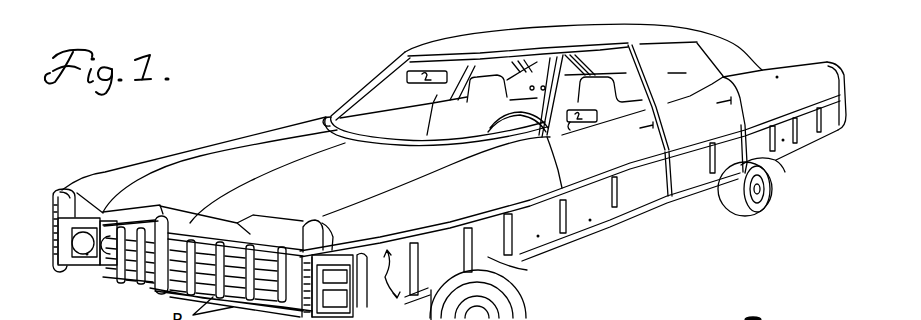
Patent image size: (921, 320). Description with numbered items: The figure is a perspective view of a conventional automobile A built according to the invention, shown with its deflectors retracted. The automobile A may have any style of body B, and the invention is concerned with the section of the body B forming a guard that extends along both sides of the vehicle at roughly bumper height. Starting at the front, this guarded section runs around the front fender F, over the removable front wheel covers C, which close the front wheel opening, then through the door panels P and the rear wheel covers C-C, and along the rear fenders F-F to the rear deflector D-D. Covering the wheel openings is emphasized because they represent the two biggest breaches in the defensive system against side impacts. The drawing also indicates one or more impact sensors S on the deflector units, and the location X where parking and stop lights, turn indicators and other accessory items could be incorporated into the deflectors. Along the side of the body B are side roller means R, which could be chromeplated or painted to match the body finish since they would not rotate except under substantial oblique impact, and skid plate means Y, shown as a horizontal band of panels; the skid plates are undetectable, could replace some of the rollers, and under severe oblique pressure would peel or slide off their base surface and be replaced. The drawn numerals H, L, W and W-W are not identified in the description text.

The automobile A is at (426, 44).
The body B is at (371, 84).
The hood H is at (360, 180).
The front fender F is at (421, 195).
The corner lamp L is at (297, 219).
The skid plate means Y is at (538, 237).
The door panels P is at (588, 221).
The side roller means R is at (667, 197).
The front wheel W is at (503, 309).
The front wheel covers C is at (488, 257).
The rear fenders F-F is at (777, 76).
The rear deflector D-D is at (847, 78).
The rear wheel covers C-C is at (783, 140).
The rear wheel W-W is at (776, 187).
The impact sensors S is at (54, 201).
The auxiliary accessory items X is at (98, 267).